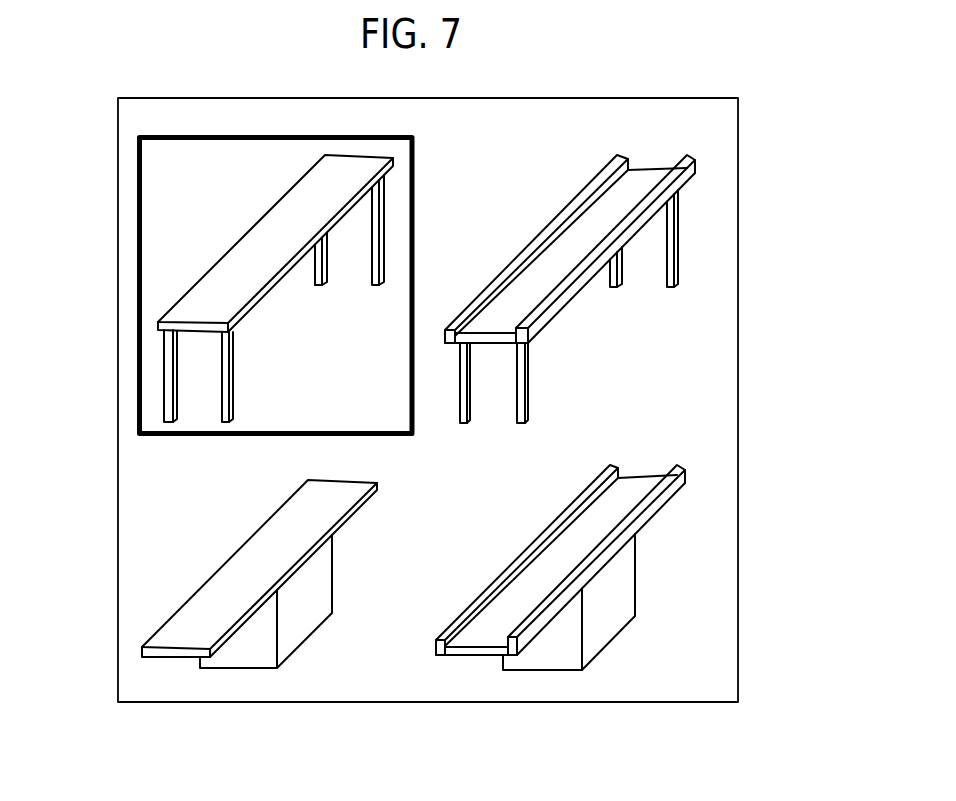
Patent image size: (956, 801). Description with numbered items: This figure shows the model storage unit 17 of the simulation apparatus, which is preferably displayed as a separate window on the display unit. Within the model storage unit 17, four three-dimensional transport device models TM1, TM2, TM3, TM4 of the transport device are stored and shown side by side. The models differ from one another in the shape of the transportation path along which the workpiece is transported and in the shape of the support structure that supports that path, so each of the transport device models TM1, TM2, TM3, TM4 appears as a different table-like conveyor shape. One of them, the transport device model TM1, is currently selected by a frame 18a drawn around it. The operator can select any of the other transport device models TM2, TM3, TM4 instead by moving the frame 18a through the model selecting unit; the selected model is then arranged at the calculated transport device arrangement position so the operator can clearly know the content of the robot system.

The model storage unit 17 is at (738, 125).
The frame 18a is at (138, 230).
The transport device model TM1 is at (197, 302).
The transport device model TM2 is at (538, 237).
The transport device model TM3 is at (245, 557).
The transport device model TM4 is at (538, 538).